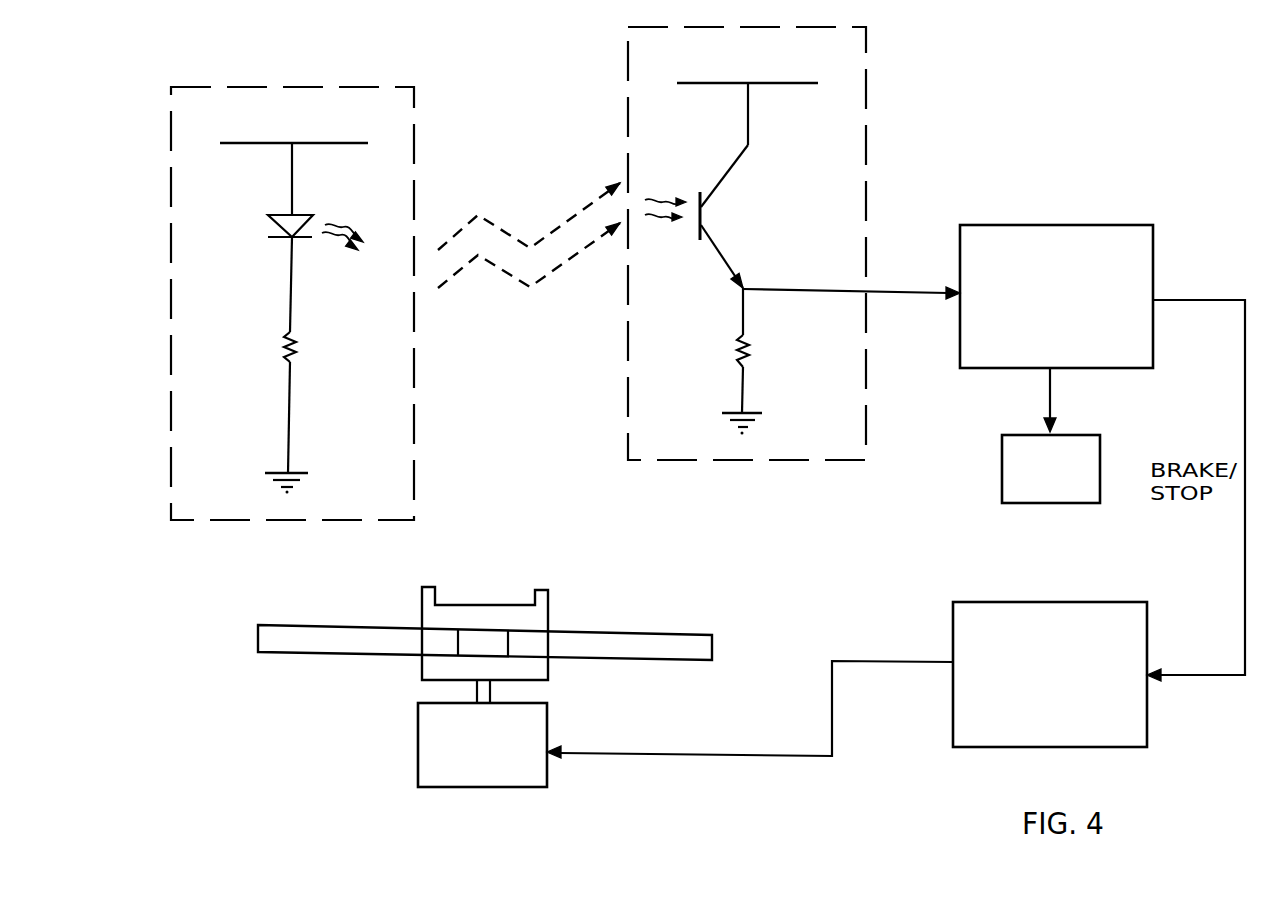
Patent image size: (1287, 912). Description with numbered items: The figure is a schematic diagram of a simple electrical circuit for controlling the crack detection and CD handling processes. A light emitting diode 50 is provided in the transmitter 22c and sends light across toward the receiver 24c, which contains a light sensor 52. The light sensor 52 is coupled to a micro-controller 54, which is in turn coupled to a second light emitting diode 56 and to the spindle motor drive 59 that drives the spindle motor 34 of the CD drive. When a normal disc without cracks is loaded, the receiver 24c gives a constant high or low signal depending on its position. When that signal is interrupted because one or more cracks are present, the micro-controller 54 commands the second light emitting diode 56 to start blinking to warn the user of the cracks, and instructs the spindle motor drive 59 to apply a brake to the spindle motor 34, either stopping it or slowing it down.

The transmitter 22c is at (413, 388).
The receiver 24c is at (798, 462).
The light emitting diode 50 is at (315, 213).
The light sensor 52 is at (700, 195).
The micro-controller 54 is at (1053, 223).
The second light emitting diode (LED) 56 is at (1048, 503).
The spindle motor drive 59 is at (1148, 712).
The spindle motor 34 is at (495, 787).